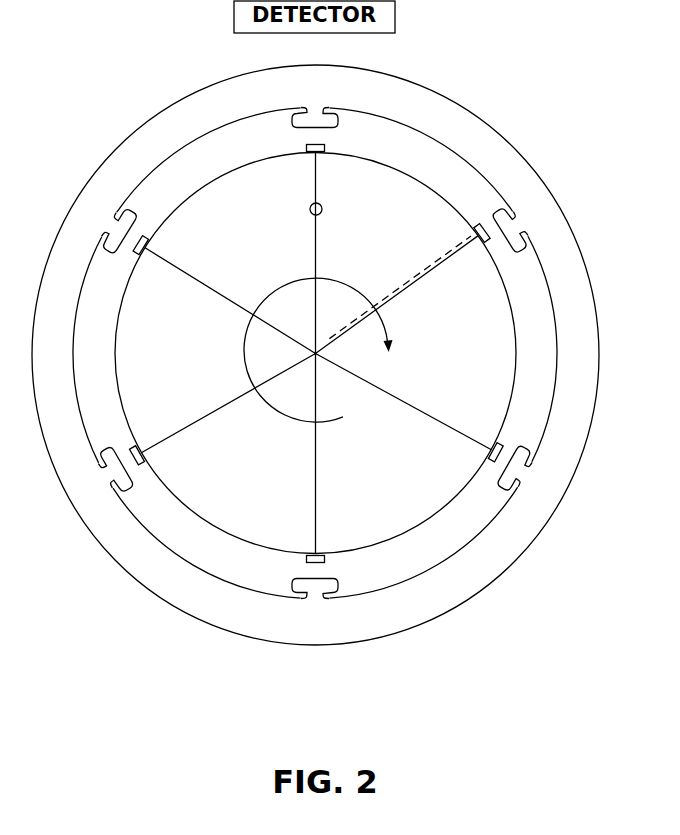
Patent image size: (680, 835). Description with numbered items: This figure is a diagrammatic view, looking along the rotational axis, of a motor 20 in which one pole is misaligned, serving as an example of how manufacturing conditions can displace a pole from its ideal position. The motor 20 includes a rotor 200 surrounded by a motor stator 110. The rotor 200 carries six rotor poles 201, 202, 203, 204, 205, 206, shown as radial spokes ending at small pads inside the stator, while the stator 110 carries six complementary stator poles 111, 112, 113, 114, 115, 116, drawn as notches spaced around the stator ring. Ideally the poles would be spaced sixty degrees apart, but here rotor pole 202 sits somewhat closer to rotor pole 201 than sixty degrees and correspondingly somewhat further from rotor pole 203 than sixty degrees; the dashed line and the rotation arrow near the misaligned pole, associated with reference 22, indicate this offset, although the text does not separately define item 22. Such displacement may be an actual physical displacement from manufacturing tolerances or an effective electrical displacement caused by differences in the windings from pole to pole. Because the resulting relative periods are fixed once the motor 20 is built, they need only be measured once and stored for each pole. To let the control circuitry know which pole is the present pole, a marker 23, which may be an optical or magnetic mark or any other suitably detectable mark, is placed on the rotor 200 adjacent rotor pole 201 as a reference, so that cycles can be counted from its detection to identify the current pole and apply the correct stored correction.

The motor 20 is at (590, 127).
The rotation direction / reference line 22 is at (429, 287).
The marker 23 is at (322, 208).
The motor stator 110 is at (568, 277).
The stator pole 111 is at (318, 114).
The stator pole 112 is at (520, 232).
The stator pole 113 is at (513, 477).
The stator pole 114 is at (317, 594).
The stator pole 115 is at (116, 477).
The stator pole 116 is at (118, 232).
The rotor 200 is at (517, 358).
The rotor pole 201 is at (319, 152).
The rotor pole 202 is at (475, 238).
The rotor pole 203 is at (490, 455).
The rotor pole 204 is at (322, 558).
The rotor pole 205 is at (145, 456).
The rotor pole 206 is at (150, 247).